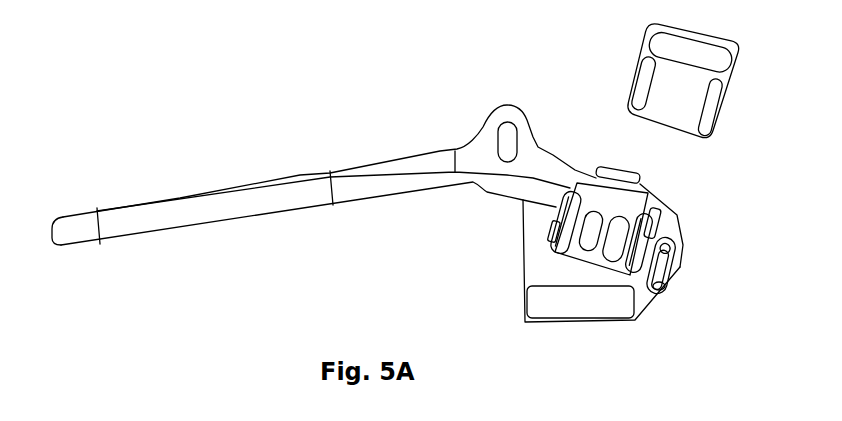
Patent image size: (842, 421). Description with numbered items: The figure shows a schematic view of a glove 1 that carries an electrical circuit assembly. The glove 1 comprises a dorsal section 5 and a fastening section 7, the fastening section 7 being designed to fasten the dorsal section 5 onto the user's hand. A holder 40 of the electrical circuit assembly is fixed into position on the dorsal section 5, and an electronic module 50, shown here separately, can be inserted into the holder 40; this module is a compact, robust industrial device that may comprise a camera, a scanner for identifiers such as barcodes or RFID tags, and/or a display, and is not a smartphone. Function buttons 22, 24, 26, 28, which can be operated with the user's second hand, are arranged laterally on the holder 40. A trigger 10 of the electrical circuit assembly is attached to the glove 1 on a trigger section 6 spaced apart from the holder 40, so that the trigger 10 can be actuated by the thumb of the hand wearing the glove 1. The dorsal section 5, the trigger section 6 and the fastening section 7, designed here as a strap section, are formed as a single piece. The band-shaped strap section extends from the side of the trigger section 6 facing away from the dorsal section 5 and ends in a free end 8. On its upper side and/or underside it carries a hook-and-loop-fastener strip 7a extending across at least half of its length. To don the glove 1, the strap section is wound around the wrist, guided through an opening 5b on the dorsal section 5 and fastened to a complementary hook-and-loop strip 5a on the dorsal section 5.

The glove 1 is at (89, 174).
The dorsal section 5 is at (548, 272).
The complementary hook-and-loop strip 5a is at (542, 308).
The opening 5b is at (670, 278).
The trigger section 6 is at (527, 120).
The fastening section 7 is at (362, 190).
The hook-and-loop-fastener strip 7a is at (263, 197).
The free end 8 is at (78, 228).
The trigger 10 is at (503, 144).
The function button 22 is at (560, 207).
The function button 24 is at (553, 237).
The function button 26 is at (660, 217).
The function button 28 is at (675, 255).
The holder 40 is at (707, 198).
The electronic module 50 is at (686, 102).